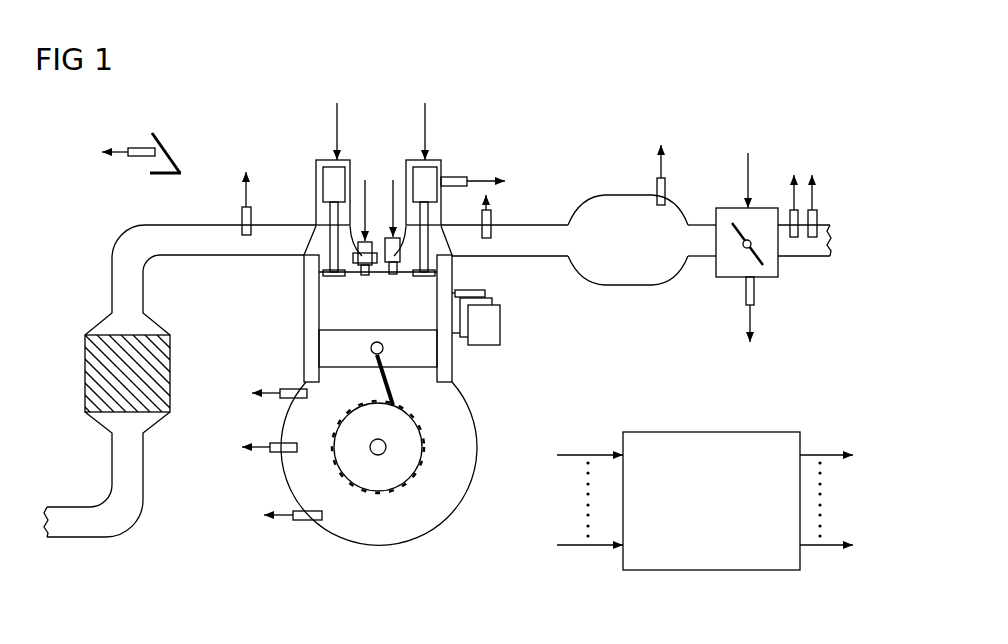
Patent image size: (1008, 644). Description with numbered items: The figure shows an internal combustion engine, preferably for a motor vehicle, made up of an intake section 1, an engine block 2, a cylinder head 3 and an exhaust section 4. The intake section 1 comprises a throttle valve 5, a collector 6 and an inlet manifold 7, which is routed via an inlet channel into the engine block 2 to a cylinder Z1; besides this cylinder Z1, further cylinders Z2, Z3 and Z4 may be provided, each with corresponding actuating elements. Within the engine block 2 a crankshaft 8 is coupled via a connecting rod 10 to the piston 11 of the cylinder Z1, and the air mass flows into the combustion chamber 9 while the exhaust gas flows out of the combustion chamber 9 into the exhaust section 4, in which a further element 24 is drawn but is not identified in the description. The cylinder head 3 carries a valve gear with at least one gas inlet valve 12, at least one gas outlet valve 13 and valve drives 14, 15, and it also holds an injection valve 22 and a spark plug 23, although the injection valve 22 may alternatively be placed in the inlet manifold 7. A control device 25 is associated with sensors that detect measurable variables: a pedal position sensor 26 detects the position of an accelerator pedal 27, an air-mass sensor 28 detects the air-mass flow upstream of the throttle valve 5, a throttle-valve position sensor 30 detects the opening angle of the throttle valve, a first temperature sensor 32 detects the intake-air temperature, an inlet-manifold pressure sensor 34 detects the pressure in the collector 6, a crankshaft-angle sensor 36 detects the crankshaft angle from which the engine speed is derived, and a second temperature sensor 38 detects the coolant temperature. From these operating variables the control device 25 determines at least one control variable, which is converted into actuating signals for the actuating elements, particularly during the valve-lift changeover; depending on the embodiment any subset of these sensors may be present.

The intake section 1 is at (660, 300).
The engine block 2 is at (288, 318).
The cylinder head 3 is at (448, 126).
The exhaust section 4 is at (112, 237).
The throttle valve 5 is at (727, 215).
The collector 6 is at (670, 273).
The inlet manifold 7 is at (547, 224).
The crankshaft 8 is at (388, 447).
The combustion chamber 9 is at (322, 320).
The connecting rod 10 is at (385, 394).
The piston 11 is at (410, 357).
The gas inlet valve 12 is at (427, 278).
The gas outlet valve 13 is at (306, 288).
The valve drive 14 is at (420, 173).
The valve drive 15 is at (324, 178).
The injection valve 22 is at (392, 278).
The spark plug 23 is at (362, 278).
The catalytic converter 24 is at (88, 374).
The control device 25 is at (735, 436).
The pedal position sensor 26 is at (140, 148).
The accelerator pedal 27 is at (170, 152).
The air-mass sensor 28 is at (790, 215).
The throttle-valve position sensor 30 is at (756, 290).
The first temperature sensor 32 is at (819, 220).
The inlet-manifold pressure sensor 34 is at (656, 185).
The crankshaft-angle sensor 36 is at (283, 452).
The second temperature sensor 38 is at (288, 389).
The cylinder Z1 is at (449, 345).
The further cylinder Z2 is at (501, 330).
The further cylinder Z3 is at (495, 300).
The further cylinder Z4 is at (485, 294).